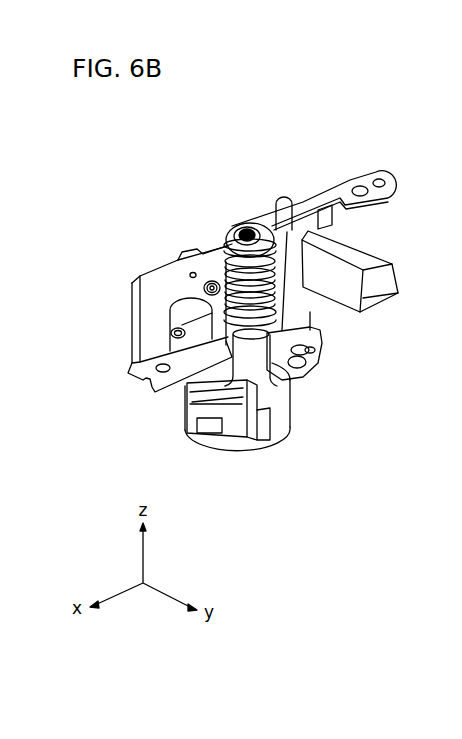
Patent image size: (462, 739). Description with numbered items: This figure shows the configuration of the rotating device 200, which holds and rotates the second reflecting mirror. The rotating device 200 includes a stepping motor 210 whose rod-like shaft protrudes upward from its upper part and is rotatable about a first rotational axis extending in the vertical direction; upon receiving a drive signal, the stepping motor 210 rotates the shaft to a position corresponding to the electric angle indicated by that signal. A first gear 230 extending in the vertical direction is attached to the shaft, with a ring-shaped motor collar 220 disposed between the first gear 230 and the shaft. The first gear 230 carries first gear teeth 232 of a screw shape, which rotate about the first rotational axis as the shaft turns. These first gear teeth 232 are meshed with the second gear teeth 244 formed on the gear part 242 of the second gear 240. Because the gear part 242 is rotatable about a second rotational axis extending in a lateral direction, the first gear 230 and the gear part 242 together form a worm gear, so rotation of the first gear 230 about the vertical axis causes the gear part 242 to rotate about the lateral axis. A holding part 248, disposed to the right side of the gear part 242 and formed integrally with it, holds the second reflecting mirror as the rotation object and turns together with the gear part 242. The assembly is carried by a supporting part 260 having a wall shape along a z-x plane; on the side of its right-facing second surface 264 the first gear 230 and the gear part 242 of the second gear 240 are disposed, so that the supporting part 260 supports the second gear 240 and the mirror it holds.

The rotating device 200 is at (310, 683).
The stepping motor 210 is at (270, 433).
The motor collar 220 is at (256, 345).
The first gear 230 is at (200, 251).
The first gear teeth 232 is at (270, 330).
The second gear 240 is at (322, 214).
The gear part 242 is at (286, 220).
The second gear teeth 244 is at (244, 226).
The holding part 248 is at (363, 257).
The supporting part 260 is at (130, 320).
The second surface 264 is at (160, 292).